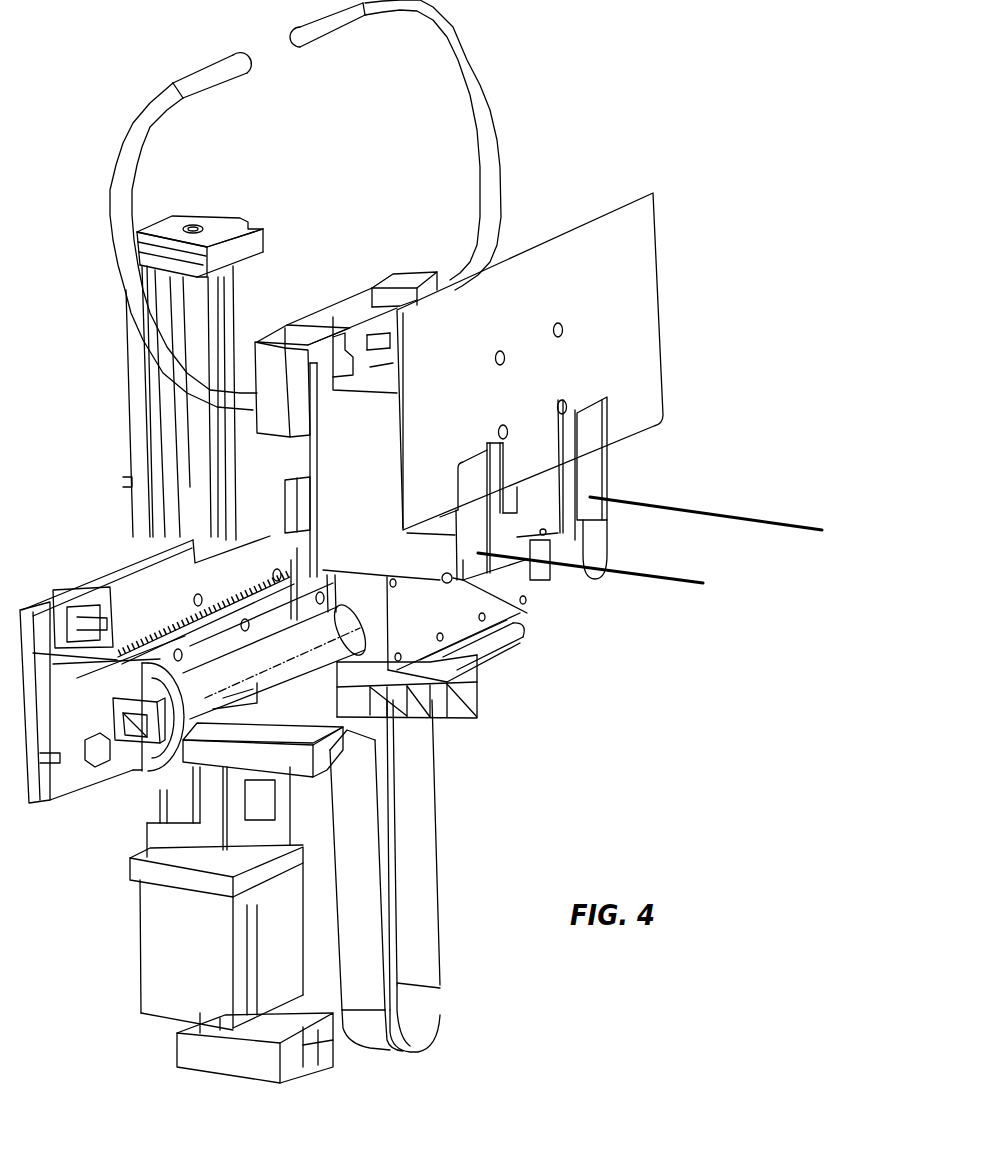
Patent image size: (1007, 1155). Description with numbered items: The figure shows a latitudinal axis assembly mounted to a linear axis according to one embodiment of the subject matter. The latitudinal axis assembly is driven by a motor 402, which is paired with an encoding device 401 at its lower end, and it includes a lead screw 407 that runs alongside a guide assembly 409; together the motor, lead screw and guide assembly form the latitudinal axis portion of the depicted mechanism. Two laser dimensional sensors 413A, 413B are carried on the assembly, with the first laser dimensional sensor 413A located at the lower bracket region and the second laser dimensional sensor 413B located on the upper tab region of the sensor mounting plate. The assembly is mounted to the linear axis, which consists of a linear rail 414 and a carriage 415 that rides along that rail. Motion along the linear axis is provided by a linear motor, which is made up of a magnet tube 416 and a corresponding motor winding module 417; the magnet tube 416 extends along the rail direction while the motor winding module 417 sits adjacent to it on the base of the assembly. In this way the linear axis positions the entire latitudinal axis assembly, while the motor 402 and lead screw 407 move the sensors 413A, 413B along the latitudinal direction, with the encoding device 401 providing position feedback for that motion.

The encoding device 401 is at (210, 1058).
The motor 402 is at (167, 930).
The lead screw 407 is at (195, 333).
The guide assembly 409 is at (142, 393).
The laser dimensional sensor 413A is at (440, 557).
The laser dimensional sensor 413B is at (593, 475).
The linear rail 414 is at (167, 647).
The carriage 415 is at (290, 483).
The magnet tube 416 is at (273, 653).
The motor winding module 417 is at (418, 620).